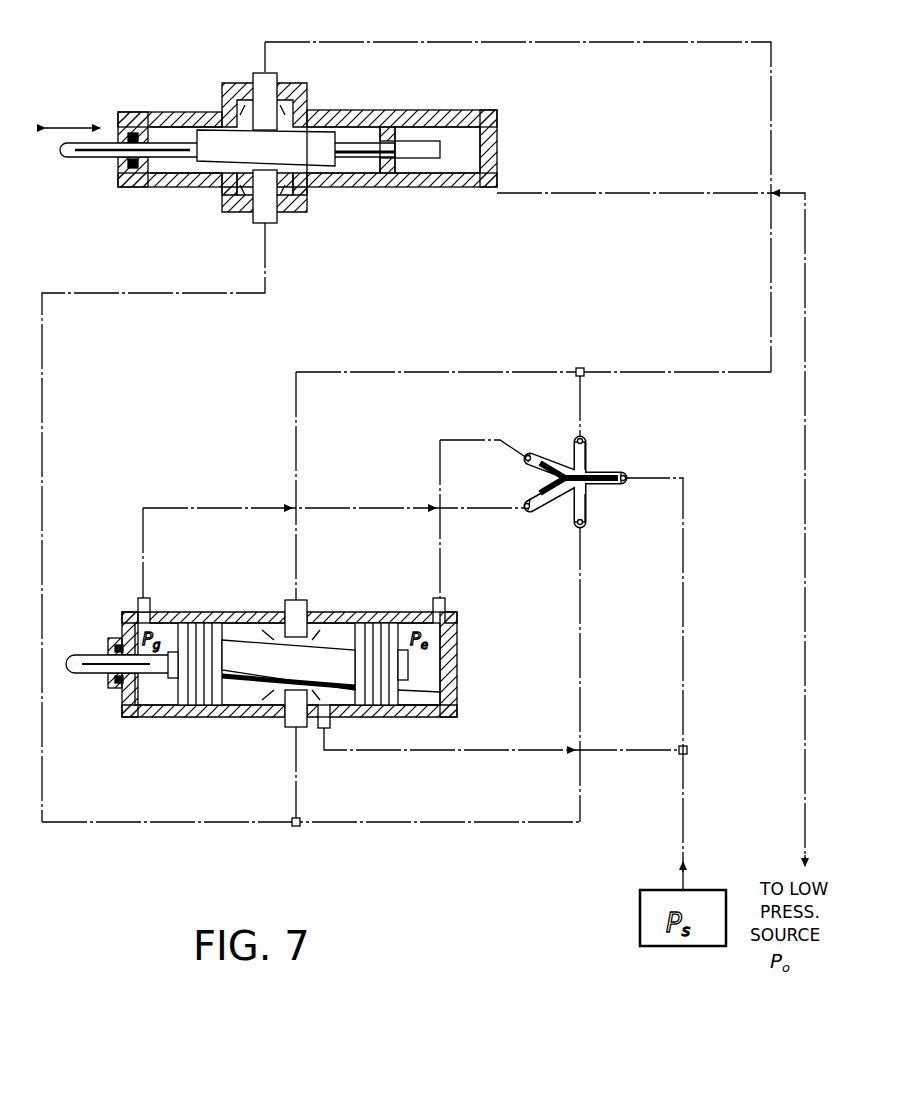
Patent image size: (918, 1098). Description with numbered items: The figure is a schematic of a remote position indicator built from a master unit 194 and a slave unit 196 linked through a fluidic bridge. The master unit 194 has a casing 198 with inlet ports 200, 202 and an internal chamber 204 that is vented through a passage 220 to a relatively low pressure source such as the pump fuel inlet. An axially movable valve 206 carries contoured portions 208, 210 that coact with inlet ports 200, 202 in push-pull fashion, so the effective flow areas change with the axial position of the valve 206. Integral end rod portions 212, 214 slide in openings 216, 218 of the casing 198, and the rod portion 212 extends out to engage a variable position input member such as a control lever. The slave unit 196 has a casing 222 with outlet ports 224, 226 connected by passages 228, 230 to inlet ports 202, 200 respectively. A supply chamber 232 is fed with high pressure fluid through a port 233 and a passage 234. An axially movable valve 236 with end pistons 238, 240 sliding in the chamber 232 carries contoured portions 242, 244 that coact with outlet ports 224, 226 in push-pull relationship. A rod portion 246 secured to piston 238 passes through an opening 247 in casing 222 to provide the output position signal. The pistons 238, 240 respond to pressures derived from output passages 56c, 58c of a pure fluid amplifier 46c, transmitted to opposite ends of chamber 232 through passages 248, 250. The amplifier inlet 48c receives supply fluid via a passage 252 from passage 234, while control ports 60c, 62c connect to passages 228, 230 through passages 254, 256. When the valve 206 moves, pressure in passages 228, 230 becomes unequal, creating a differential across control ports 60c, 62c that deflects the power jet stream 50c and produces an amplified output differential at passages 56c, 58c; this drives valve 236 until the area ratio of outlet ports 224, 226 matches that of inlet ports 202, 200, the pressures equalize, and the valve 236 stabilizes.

The master unit 194 is at (185, 109).
The slave unit 196 is at (353, 599).
The casing 198 is at (462, 115).
The inlet port 200 is at (257, 193).
The inlet port 202 is at (270, 90).
The chamber 204 is at (363, 126).
The axially movable valve 206 is at (266, 148).
The contoured portion 208 is at (200, 165).
The contoured portion 210 is at (250, 112).
The end rod portion 212 is at (90, 158).
The end rod portion 214 is at (433, 152).
The opening 216 is at (147, 135).
The opening 218 is at (391, 174).
The passage 220 is at (612, 196).
The casing 222 is at (180, 618).
The outlet port 224 is at (283, 604).
The outlet port 226 is at (287, 722).
The passage 228 is at (297, 447).
The passage 230 is at (292, 818).
The supply chamber 232 is at (361, 622).
The port 233 is at (320, 730).
The passage 234 is at (416, 752).
The axially movable valve 236 is at (288, 665).
The end piston 238 is at (180, 707).
The end piston 240 is at (444, 697).
The contoured portion 242 is at (230, 625).
The contoured portion 244 is at (340, 694).
The rod portion 246 is at (83, 655).
The opening 247 is at (120, 684).
The passage 248 is at (441, 580).
The passage 250 is at (452, 441).
The passage 252 is at (685, 498).
The passage 254 is at (585, 377).
The passage 256 is at (585, 622).
The pure fluid amplifier 46c is at (568, 477).
The inlet 48c is at (623, 468).
The power jet stream 50c is at (612, 492).
The output passage 56c is at (530, 512).
The output passage 58c is at (525, 460).
The control port 60c is at (593, 512).
The control port 62c is at (591, 447).